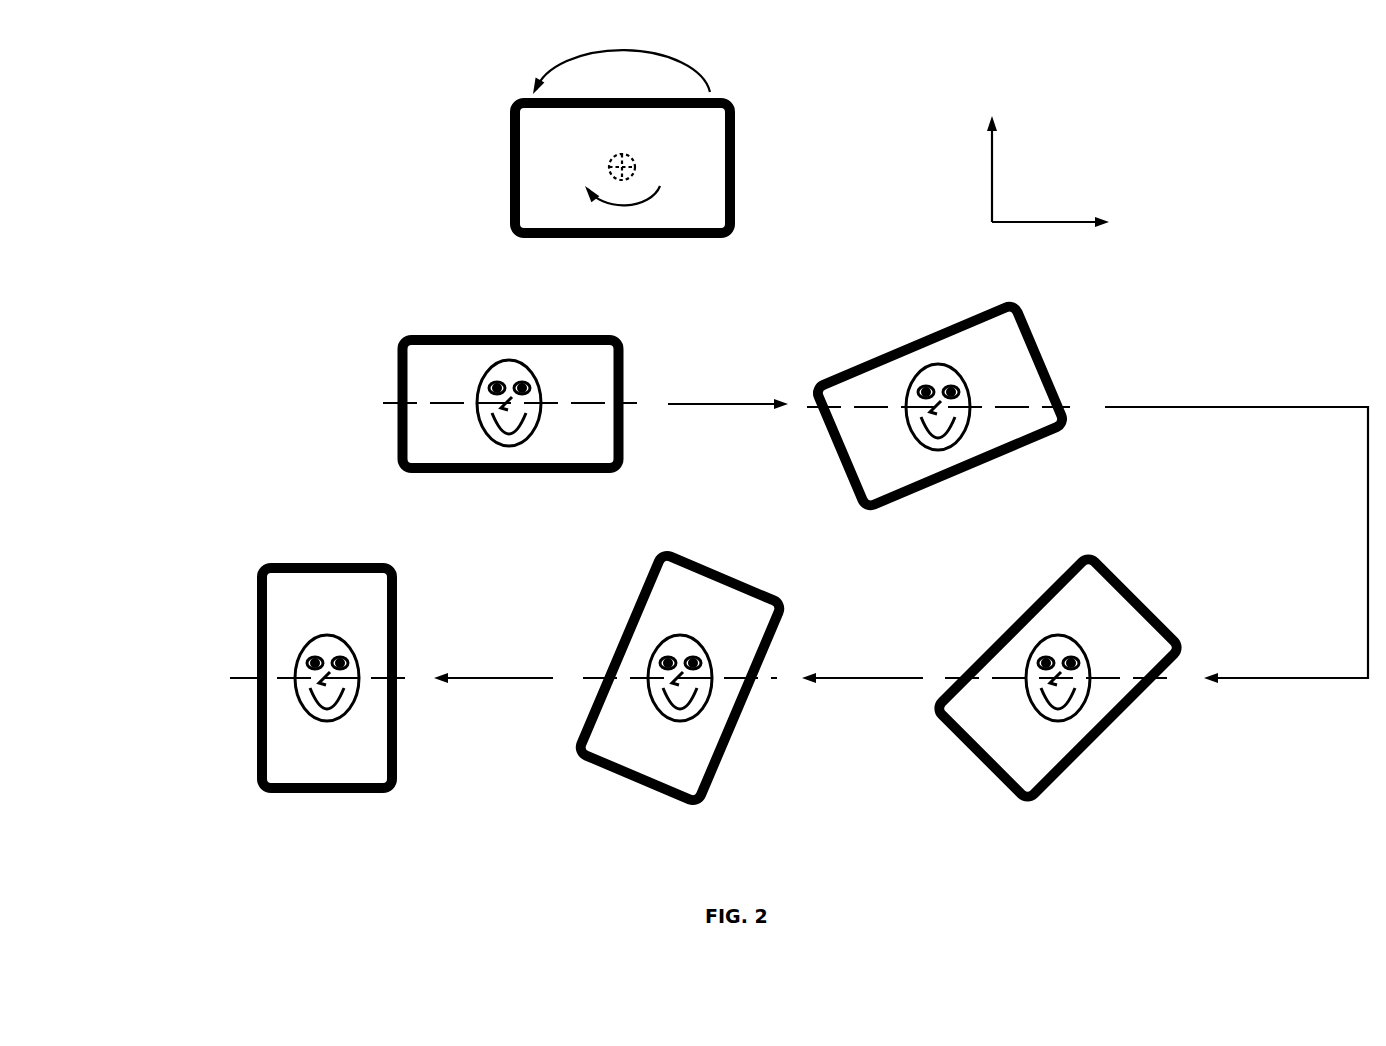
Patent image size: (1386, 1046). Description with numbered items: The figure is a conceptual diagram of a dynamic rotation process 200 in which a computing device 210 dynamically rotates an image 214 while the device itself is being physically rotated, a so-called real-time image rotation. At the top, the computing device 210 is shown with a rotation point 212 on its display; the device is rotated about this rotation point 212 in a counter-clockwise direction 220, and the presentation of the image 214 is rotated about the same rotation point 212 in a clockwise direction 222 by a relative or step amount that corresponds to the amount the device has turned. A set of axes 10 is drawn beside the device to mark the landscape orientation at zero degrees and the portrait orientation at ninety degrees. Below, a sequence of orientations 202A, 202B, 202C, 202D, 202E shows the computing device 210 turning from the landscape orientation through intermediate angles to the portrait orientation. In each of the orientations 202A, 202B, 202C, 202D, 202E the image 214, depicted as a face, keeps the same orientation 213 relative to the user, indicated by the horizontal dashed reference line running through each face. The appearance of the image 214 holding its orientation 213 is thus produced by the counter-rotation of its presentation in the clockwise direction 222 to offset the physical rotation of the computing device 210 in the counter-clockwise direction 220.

The dynamic rotation process 200 is at (246, 99).
The computing device 210 is at (736, 146).
The rotation point 212 is at (608, 162).
The orientation 213 is at (383, 402).
The image 214 is at (527, 364).
The counter-clockwise direction 220 is at (640, 43).
The clockwise direction 222 is at (626, 209).
The axes 10 is at (990, 218).
The orientation 202A is at (511, 433).
The orientation 202B is at (940, 415).
The orientation 202C is at (1058, 678).
The orientation 202D is at (696, 678).
The orientation 202E is at (327, 700).